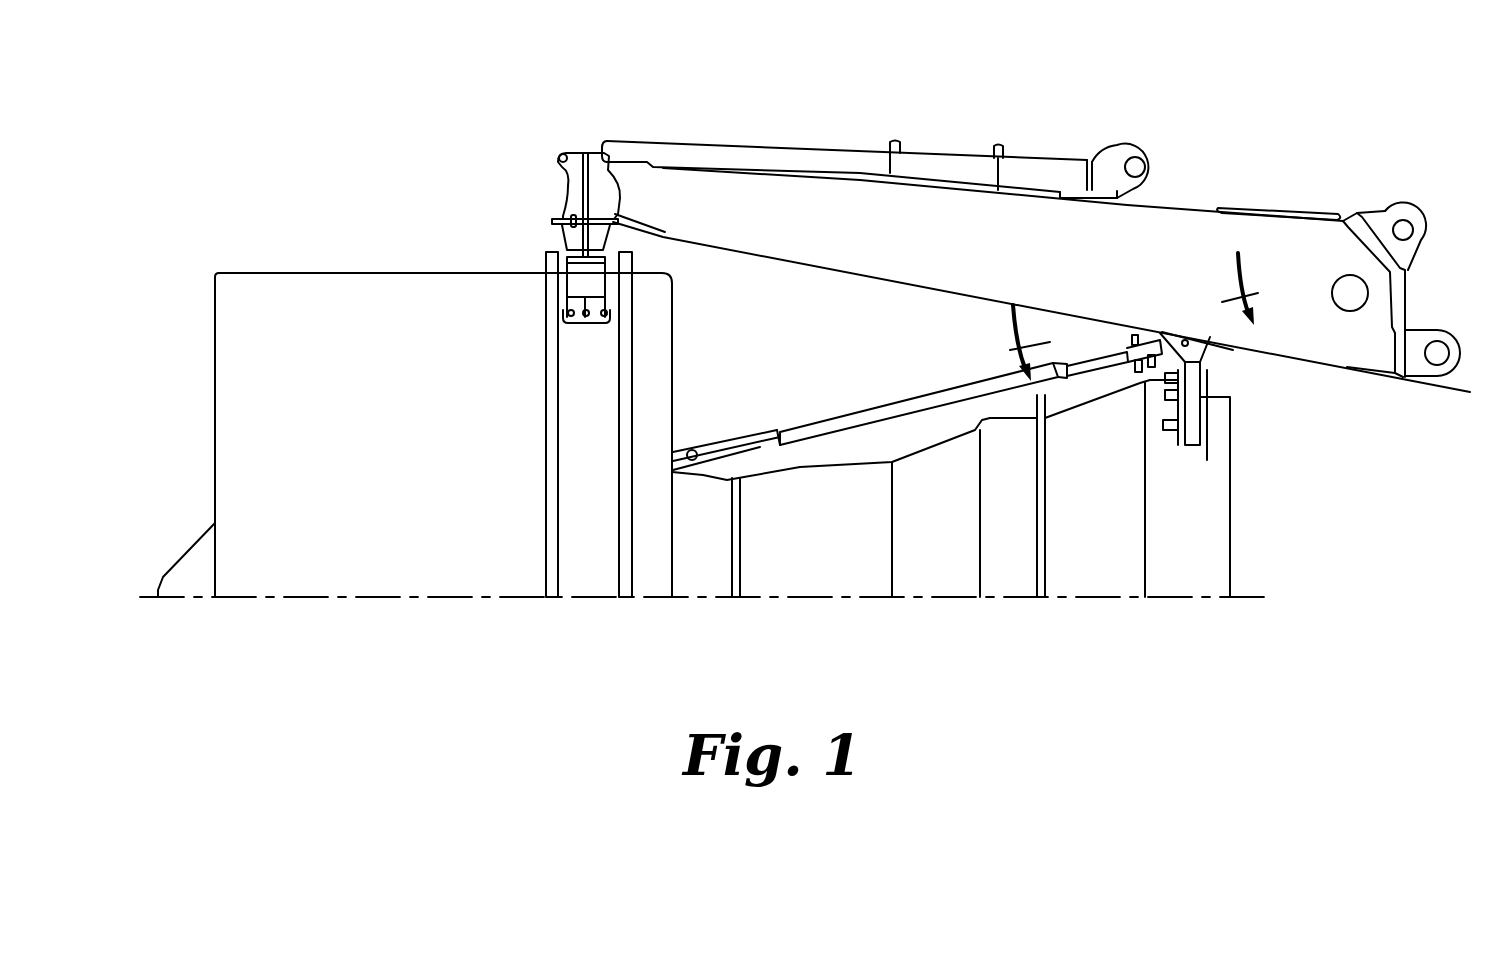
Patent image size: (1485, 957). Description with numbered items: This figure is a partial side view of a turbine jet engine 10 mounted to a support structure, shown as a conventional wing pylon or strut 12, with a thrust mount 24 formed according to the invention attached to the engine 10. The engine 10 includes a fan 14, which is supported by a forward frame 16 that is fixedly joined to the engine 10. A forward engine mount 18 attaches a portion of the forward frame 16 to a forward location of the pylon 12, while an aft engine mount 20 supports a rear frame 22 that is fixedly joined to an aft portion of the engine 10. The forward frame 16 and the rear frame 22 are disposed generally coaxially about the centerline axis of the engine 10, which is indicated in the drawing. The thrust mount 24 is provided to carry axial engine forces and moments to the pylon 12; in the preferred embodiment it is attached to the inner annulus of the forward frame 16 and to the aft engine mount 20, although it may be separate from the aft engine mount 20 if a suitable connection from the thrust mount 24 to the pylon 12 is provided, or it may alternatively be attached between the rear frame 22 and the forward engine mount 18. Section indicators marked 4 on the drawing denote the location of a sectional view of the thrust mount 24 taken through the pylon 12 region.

The turbine jet engine 10 is at (409, 142).
The pylon 12 is at (818, 153).
The fan 14 is at (486, 252).
The forward frame 16 is at (702, 570).
The forward engine mount 18 is at (541, 233).
The aft engine mount 20 is at (1232, 377).
The rear frame 22 is at (1210, 583).
The thrust mount 24 is at (974, 358).
The section line 4- 4 is at (1136, 317).